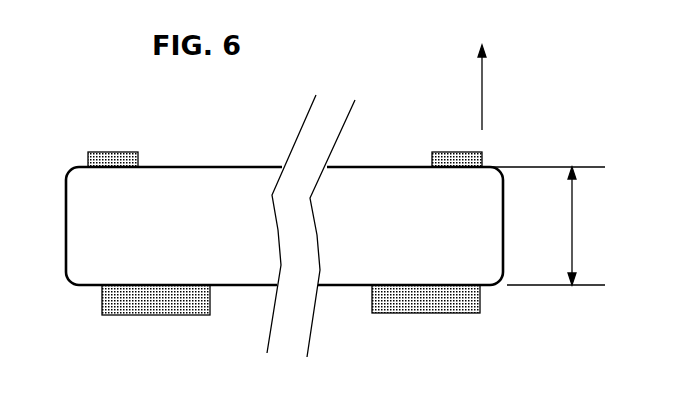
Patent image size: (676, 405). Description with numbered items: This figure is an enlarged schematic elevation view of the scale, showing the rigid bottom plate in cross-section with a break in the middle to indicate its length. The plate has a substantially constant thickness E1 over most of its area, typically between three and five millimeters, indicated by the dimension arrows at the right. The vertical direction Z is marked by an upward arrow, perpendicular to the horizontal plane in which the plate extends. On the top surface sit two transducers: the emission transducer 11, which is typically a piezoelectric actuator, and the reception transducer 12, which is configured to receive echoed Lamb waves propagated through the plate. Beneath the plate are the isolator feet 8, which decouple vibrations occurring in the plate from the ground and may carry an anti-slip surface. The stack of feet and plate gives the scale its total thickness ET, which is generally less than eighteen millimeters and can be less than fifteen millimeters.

The isolator feet 8 is at (138, 300).
The emission transducer 11 is at (110, 158).
The reception transducer 12 is at (452, 155).
The total thickness ET is at (324, 226).
The thickness E1 is at (553, 226).
The Z direction Z is at (494, 87).